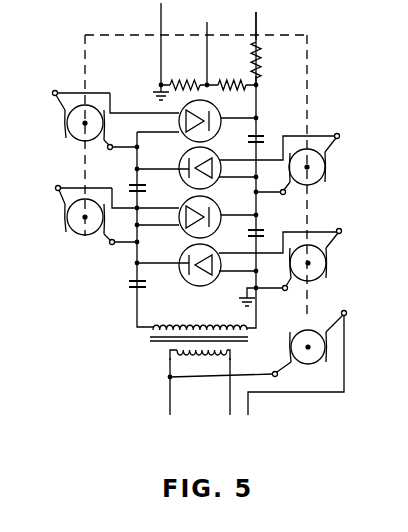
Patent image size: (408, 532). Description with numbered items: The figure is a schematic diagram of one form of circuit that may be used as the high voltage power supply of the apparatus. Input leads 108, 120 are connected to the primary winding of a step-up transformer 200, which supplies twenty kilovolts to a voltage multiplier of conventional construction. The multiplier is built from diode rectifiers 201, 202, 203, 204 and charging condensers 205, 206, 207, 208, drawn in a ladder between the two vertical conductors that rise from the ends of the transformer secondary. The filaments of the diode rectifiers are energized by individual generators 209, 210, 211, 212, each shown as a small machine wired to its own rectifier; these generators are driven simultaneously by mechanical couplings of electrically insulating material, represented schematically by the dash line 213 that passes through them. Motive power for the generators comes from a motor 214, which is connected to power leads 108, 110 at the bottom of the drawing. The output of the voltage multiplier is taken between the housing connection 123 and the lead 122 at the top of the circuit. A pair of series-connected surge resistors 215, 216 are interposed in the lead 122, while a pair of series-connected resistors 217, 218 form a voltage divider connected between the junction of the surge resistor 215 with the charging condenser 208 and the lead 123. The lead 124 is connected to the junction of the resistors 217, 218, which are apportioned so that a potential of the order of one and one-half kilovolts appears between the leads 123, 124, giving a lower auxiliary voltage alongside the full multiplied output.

The input lead 108 is at (170, 394).
The power lead 110 is at (250, 398).
The input lead 120 is at (229, 387).
The lead 122 is at (255, 32).
The housing connection 123 is at (160, 31).
The lead 124 is at (207, 31).
The step-up transformer 200 is at (160, 341).
The diode rectifier 201 is at (195, 284).
The diode rectifier 202 is at (187, 235).
The diode rectifier 203 is at (211, 182).
The diode rectifier 204 is at (187, 141).
The charging condenser 205 is at (129, 288).
The charging condenser 206 is at (267, 235).
The charging condenser 207 is at (146, 188).
The charging condenser 208 is at (264, 142).
The generator 209 is at (320, 277).
The generator 210 is at (82, 237).
The generator 211 is at (321, 182).
The generator 212 is at (80, 142).
The mechanical coupling 213 is at (307, 318).
The motor 214 is at (302, 363).
The surge resistor 215 is at (258, 73).
The surge resistor 216 is at (258, 47).
The resistor 217 is at (240, 80).
The resistor 218 is at (187, 82).